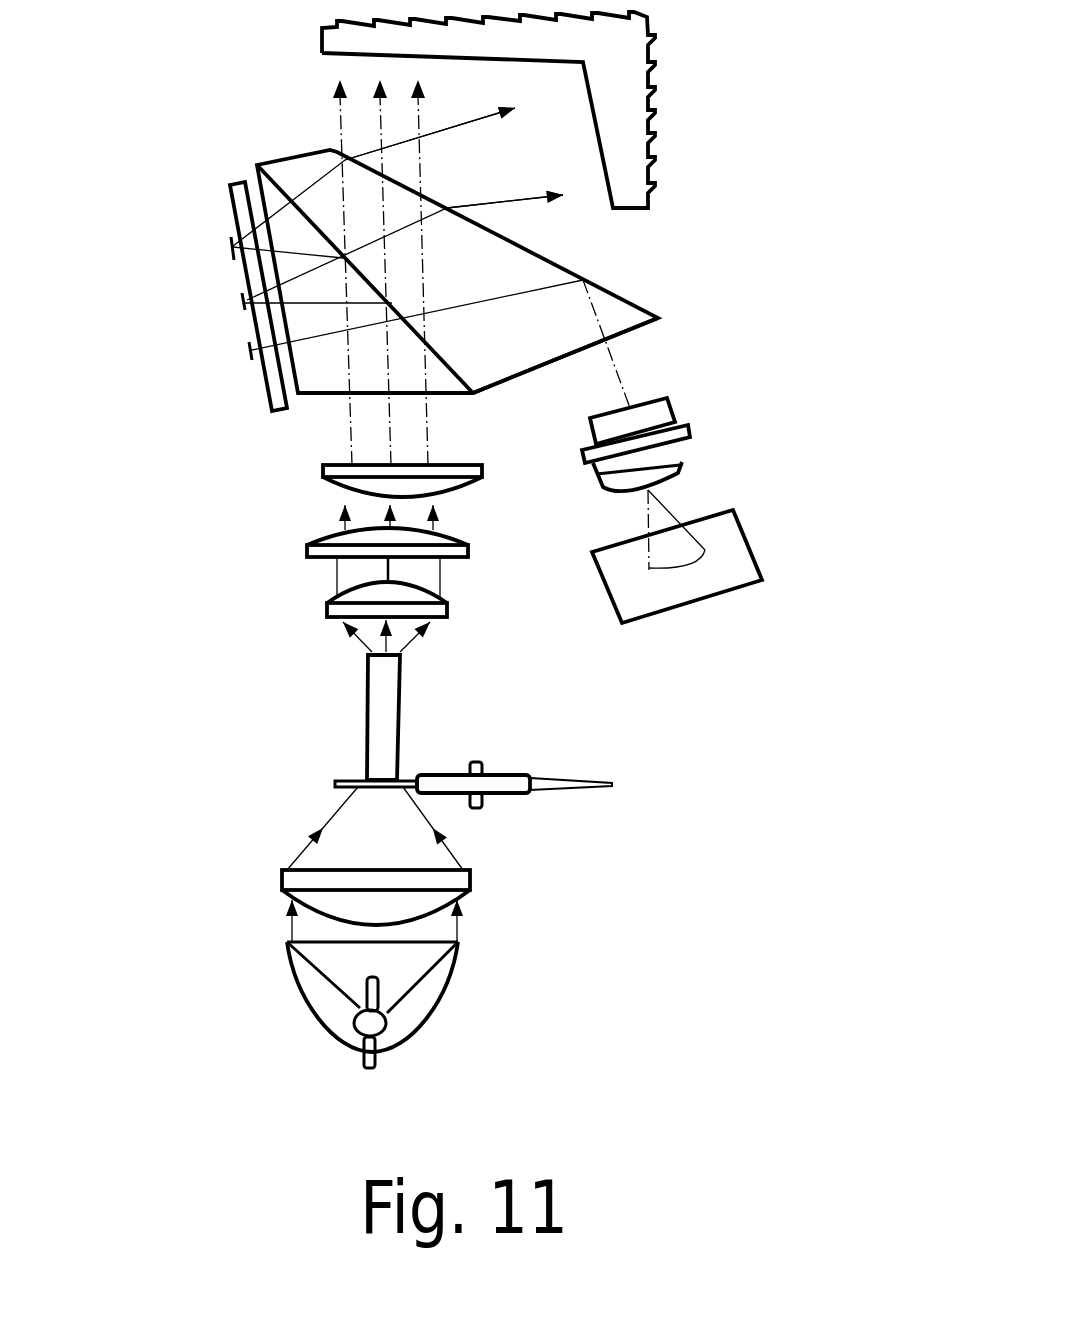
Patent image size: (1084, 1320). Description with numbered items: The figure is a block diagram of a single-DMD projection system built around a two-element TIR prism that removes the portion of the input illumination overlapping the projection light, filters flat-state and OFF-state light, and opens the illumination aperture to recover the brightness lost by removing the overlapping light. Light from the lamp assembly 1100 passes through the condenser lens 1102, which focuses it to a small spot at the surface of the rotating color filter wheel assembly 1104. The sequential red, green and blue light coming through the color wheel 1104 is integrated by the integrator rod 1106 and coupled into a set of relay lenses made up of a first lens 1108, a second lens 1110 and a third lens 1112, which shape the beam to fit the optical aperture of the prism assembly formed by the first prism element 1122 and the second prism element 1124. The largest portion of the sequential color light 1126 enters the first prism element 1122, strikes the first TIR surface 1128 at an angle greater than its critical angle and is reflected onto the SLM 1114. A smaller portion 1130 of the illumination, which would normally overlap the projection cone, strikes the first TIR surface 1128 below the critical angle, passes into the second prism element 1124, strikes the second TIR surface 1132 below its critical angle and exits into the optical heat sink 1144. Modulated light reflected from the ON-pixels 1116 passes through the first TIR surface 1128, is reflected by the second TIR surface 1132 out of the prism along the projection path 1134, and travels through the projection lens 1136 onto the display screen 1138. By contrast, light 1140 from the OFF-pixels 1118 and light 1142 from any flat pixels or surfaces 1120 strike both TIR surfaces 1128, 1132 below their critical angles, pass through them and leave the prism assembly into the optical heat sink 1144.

The lamp assembly 1100 is at (438, 987).
The condenser lens 1102 is at (470, 878).
The rotating color filter wheel assembly 1104 is at (545, 781).
The integrator rod 1106 is at (400, 700).
The first relay lens 1108 is at (327, 612).
The second relay lens 1110 is at (307, 556).
The third relay lens 1112 is at (323, 472).
The SLM (DMD) 1114 is at (232, 208).
The ON-pixels 1116 is at (249, 351).
The OFF-pixels 1118 is at (229, 241).
The flat-pixels/surfaces 1120 is at (242, 307).
The first TIR prism element 1122 is at (333, 395).
The second TIR prism element 1124 is at (522, 372).
The sequential color light 1126 is at (435, 428).
The first TIR surface 1128 is at (273, 160).
The smaller portion of the input illumination 1130 is at (340, 127).
The second TIR surface 1132 is at (643, 303).
The projection path 1134 is at (618, 370).
The projection lens 1136 is at (692, 423).
The display screen 1138 is at (745, 567).
The light from OFF-pixels 1140 is at (503, 118).
The light from flat-pixels/surfaces 1142 is at (548, 203).
The optical heat sink 1144 is at (657, 63).